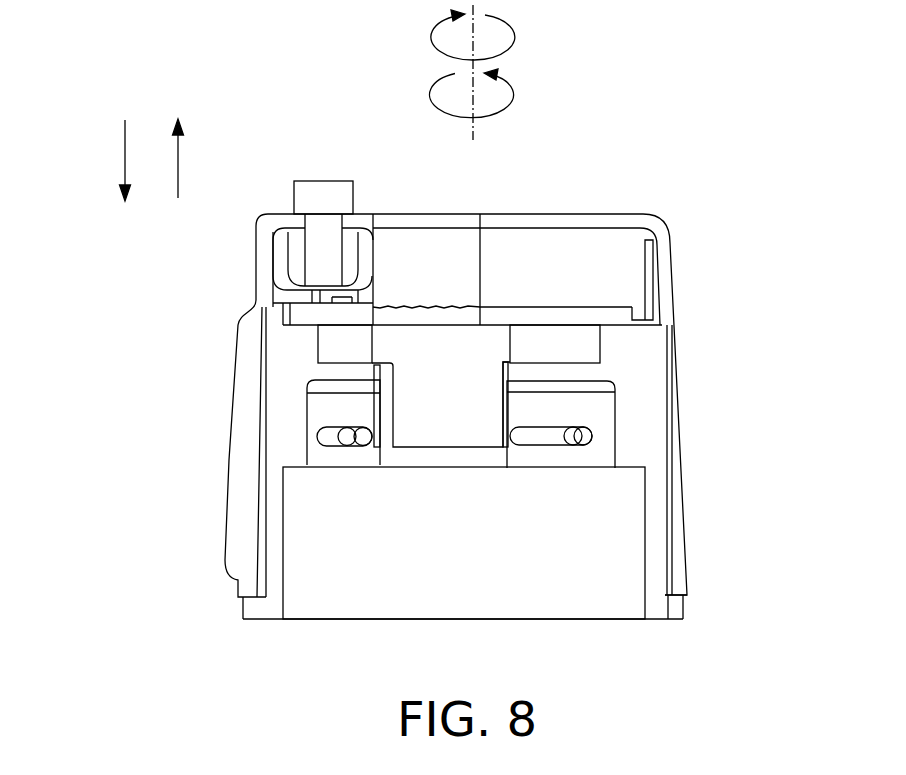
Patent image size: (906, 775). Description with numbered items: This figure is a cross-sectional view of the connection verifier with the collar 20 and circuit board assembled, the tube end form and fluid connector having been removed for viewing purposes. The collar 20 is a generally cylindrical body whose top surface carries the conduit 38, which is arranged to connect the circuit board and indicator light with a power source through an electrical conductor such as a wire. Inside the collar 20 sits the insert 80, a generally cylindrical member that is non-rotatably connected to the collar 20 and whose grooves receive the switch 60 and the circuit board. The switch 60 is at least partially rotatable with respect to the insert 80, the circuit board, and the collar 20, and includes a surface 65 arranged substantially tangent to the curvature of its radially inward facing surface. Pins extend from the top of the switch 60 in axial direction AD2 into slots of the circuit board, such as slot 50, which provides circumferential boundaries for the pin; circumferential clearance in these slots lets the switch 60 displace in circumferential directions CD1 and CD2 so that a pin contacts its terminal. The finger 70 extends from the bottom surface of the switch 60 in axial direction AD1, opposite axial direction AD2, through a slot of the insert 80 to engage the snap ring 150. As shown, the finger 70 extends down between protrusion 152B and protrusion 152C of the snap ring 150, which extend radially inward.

The collar 20 is at (681, 491).
The conduit 38 is at (316, 188).
The slot 50 is at (402, 302).
The switch 60 is at (392, 340).
The surface 65 is at (588, 346).
The finger 70 is at (412, 408).
The insert 80 is at (606, 601).
The snap ring 150 is at (538, 446).
The protrusion 152B is at (353, 446).
The protrusion 152C is at (592, 432).
The axial direction AD1 is at (122, 156).
The axial direction AD2 is at (180, 168).
The circumferential direction CD1 is at (515, 37).
The circumferential direction CD2 is at (515, 95).